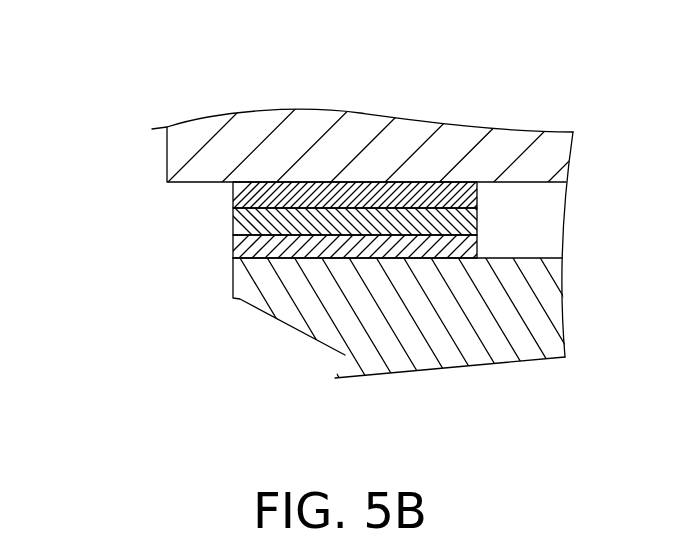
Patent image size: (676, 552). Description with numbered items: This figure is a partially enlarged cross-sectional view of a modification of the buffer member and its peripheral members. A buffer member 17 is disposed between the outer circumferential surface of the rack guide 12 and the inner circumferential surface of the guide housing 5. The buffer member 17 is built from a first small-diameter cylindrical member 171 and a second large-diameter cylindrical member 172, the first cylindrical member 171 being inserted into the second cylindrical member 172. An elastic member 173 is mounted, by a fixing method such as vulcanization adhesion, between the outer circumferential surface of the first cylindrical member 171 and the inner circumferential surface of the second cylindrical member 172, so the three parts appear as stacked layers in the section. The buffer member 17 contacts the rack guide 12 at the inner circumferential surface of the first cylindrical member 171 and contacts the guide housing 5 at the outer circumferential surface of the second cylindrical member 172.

The guide housing 5 is at (320, 138).
The buffer member 17 is at (73, 222).
The second large-diameter cylindrical member 172 is at (233, 195).
The elastic member 173 is at (233, 221).
The first small-diameter cylindrical member 171 is at (233, 249).
The rack guide 12 is at (352, 352).